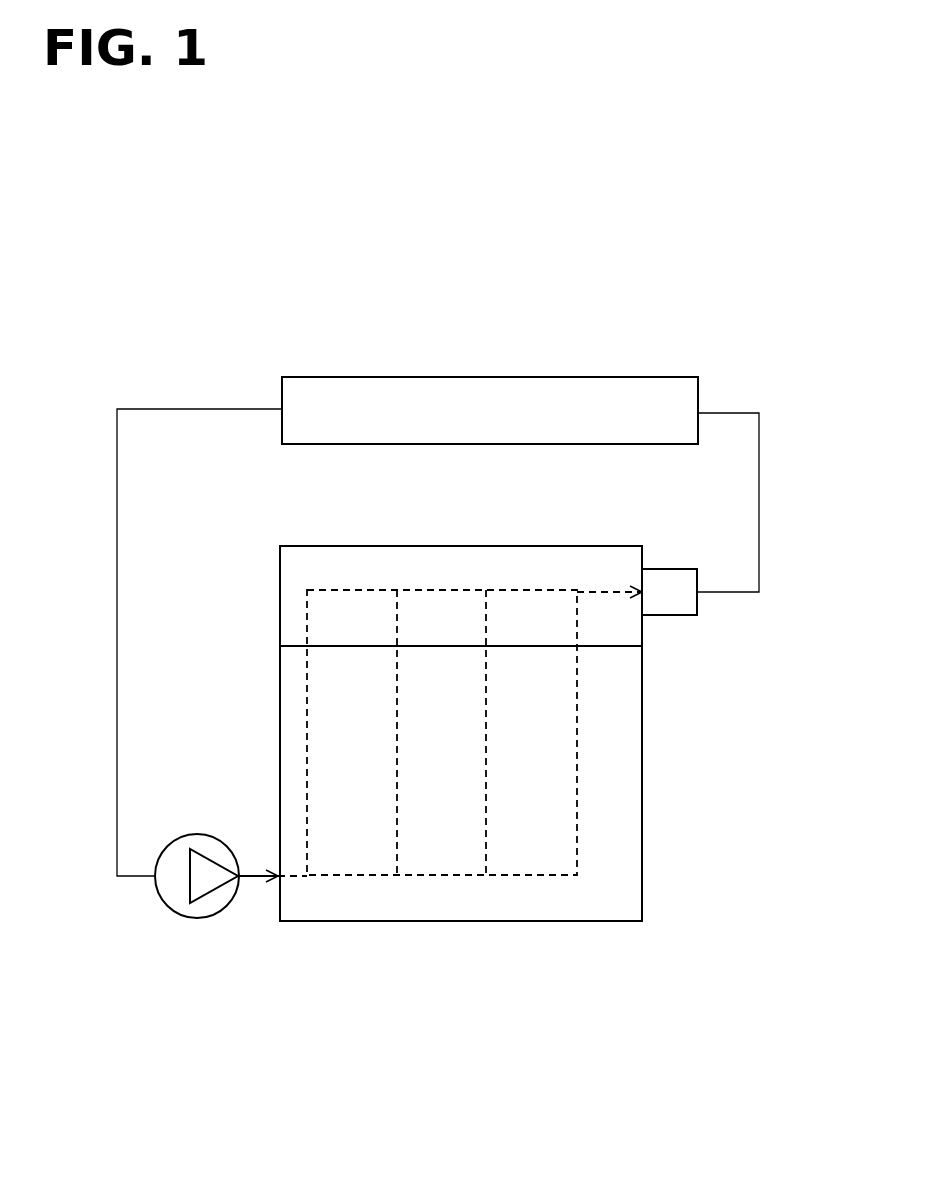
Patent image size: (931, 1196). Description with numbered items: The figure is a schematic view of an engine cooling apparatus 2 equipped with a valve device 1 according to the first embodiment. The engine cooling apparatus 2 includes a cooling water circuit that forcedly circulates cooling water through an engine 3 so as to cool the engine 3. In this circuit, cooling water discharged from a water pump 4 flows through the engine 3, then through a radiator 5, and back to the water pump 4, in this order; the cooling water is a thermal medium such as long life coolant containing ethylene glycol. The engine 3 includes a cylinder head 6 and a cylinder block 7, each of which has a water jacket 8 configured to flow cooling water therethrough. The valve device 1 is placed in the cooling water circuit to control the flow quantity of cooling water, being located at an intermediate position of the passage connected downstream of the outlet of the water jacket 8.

The valve device 1 is at (678, 615).
The engine cooling apparatus 2 is at (784, 247).
The engine 3 is at (363, 922).
The water pump 4 is at (192, 917).
The radiator 5 is at (578, 390).
The cylinder head 6 is at (575, 563).
The cylinder block 7 is at (633, 822).
The water jacket 8 is at (548, 878).